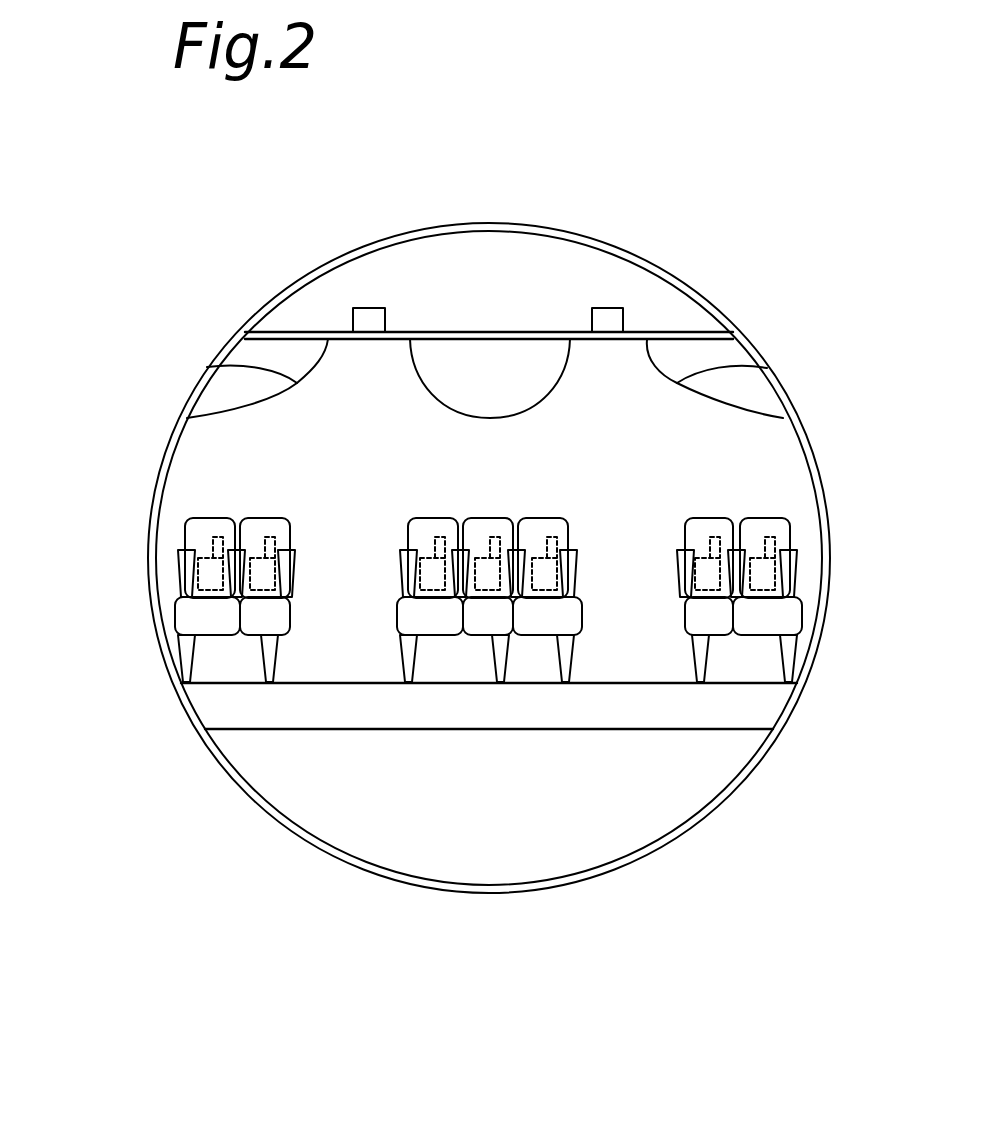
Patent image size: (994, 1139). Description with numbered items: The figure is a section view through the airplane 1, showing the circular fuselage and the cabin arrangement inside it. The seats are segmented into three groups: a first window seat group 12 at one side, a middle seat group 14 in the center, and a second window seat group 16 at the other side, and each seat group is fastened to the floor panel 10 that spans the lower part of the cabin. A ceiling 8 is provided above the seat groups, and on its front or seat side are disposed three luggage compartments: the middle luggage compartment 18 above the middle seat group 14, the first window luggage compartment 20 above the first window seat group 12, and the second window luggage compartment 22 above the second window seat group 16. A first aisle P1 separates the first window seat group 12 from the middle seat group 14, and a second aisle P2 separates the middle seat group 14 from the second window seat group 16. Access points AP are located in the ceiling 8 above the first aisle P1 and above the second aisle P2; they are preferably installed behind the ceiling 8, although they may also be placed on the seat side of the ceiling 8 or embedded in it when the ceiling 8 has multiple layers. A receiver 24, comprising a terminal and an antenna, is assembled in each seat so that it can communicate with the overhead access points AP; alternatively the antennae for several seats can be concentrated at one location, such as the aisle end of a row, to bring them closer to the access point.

The airplane 1 is at (632, 860).
The ceiling 8 is at (686, 331).
The floor panel 10 is at (247, 732).
The first window seat group 12 is at (213, 518).
The middle seat group 14 is at (440, 635).
The second window seat group 16 is at (767, 518).
The middle luggage compartment 18 is at (488, 418).
The first window luggage compartment 20 is at (207, 367).
The second window luggage compartment 22 is at (767, 368).
The receiver 24 is at (250, 575).
The access points AP is at (370, 308).
The first aisle P1 is at (377, 683).
The second aisle P2 is at (630, 683).